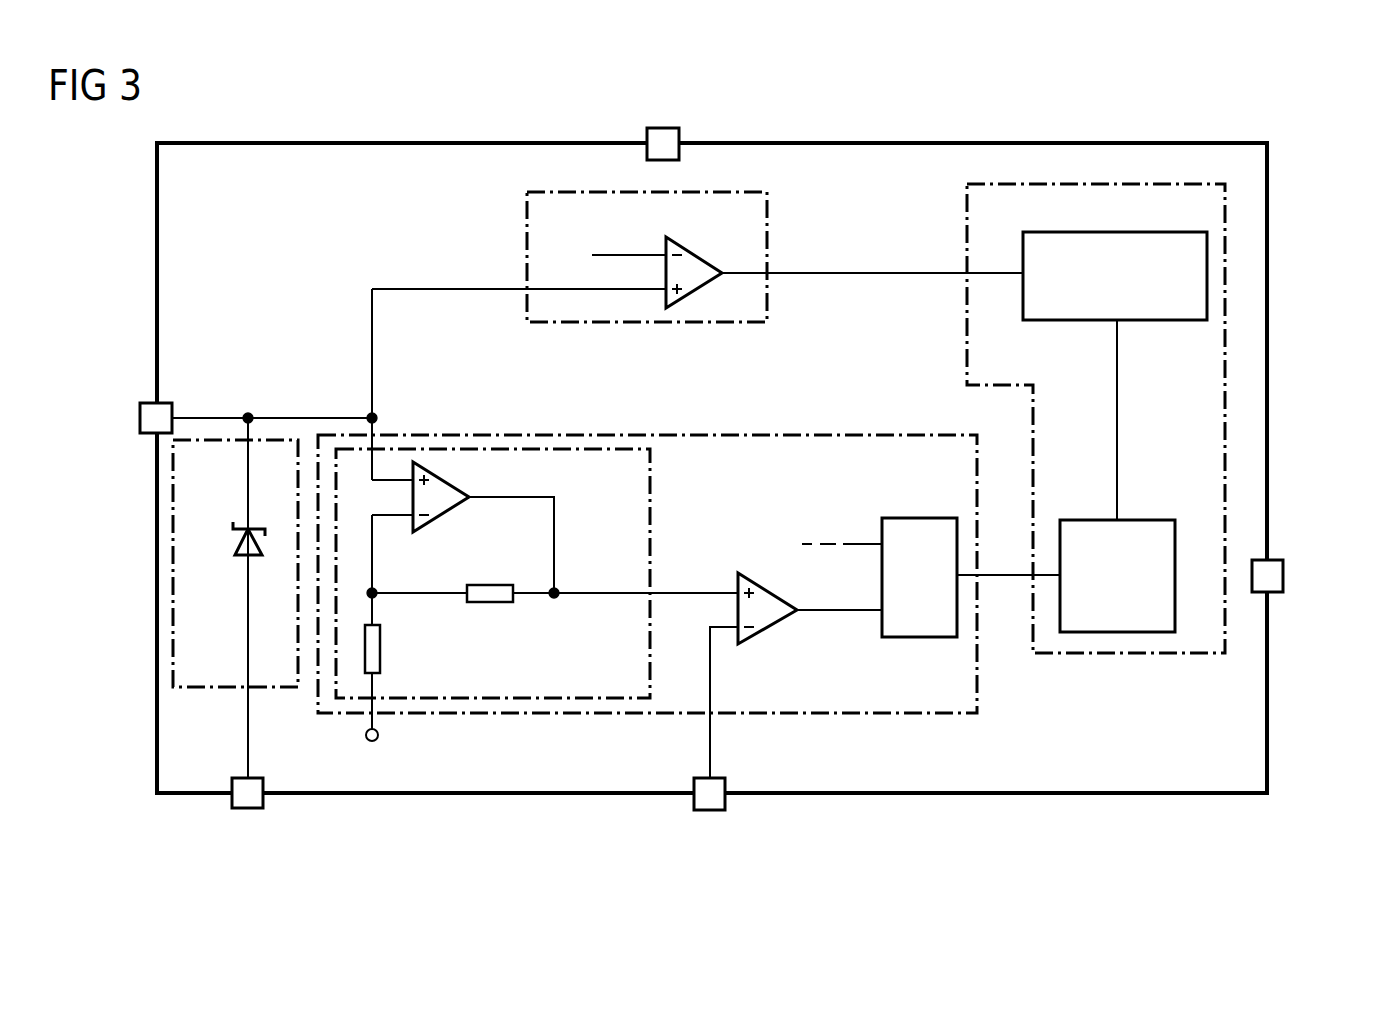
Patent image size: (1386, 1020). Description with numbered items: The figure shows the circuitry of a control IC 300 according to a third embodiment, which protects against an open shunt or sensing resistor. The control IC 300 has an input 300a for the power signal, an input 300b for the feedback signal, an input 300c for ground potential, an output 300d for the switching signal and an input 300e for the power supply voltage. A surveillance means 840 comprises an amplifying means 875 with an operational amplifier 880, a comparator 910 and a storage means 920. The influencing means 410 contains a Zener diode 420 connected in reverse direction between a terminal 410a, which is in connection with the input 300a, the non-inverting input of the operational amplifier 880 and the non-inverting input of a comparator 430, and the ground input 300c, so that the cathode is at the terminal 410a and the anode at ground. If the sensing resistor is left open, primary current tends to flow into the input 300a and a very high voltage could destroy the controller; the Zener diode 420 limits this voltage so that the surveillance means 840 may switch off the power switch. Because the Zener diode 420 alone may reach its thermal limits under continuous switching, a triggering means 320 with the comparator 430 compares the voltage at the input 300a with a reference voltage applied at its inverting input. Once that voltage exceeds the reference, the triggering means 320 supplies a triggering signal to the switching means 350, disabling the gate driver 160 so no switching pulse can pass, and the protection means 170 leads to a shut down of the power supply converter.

The control IC 300 is at (1195, 143).
The input for the power signal Vcs 300a is at (140, 418).
The input for the feedback signal 300b is at (708, 810).
The input for ground potential 300c is at (247, 808).
The output for the switching signal 300d is at (1283, 576).
The input for the power supply voltage Vcc 300e is at (663, 128).
The triggering means 320 is at (688, 257).
The switching means 350 is at (1052, 418).
The comparator 430 is at (666, 245).
The protection means 170 is at (1148, 322).
The gate driver 160 is at (1135, 520).
The influencing means 410 is at (235, 598).
The terminal 410a is at (245, 528).
The Zener diode 420 is at (243, 556).
The surveillance means 840 is at (690, 608).
The amplifying means 875 is at (534, 589).
The operational amplifier 880 is at (445, 512).
The comparator 910 is at (767, 633).
The storage means 920 is at (920, 637).